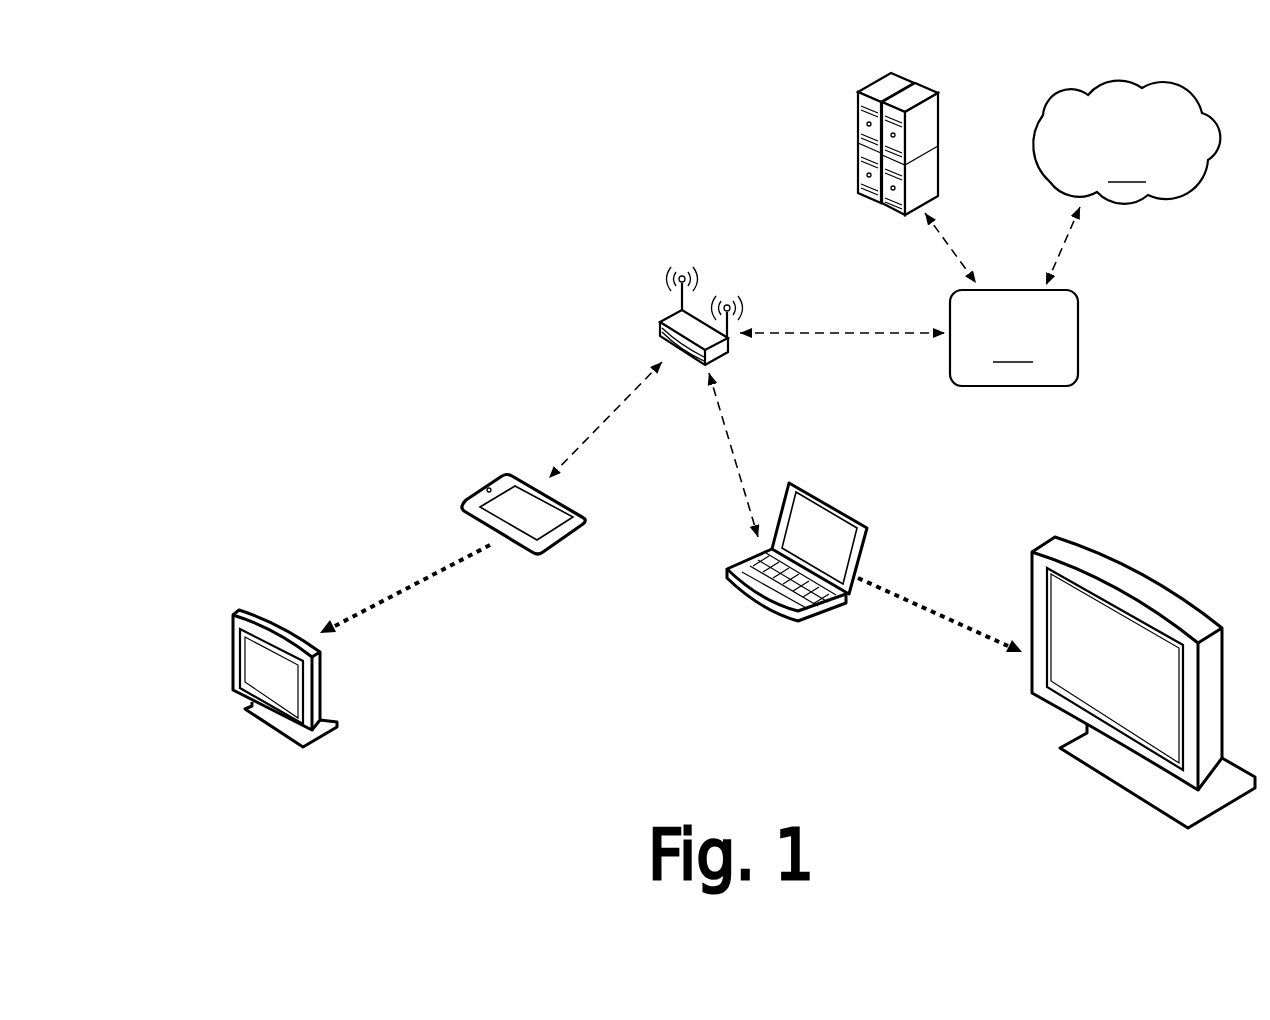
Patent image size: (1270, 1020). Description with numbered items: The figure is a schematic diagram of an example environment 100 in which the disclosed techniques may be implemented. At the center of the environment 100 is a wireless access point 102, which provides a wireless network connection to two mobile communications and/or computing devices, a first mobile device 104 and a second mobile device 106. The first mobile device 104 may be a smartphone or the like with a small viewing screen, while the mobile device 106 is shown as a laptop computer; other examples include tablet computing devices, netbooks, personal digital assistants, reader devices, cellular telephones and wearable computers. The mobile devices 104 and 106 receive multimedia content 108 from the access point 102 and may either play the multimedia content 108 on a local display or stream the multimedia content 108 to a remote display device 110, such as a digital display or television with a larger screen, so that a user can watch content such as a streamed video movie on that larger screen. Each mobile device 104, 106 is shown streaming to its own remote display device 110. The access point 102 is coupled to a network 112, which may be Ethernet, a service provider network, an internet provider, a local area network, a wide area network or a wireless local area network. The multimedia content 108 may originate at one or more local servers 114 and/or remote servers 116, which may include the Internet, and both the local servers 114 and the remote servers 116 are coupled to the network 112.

The example environment 100 is at (453, 86).
The wireless access point 102 is at (662, 318).
The mobile device 104 is at (497, 478).
The mobile device 106 is at (750, 600).
The multimedia content 108 is at (322, 674).
The remote display device 110 is at (233, 640).
The network 112 is at (1014, 338).
The local server 114 is at (860, 90).
The remote server 116 is at (1126, 142).